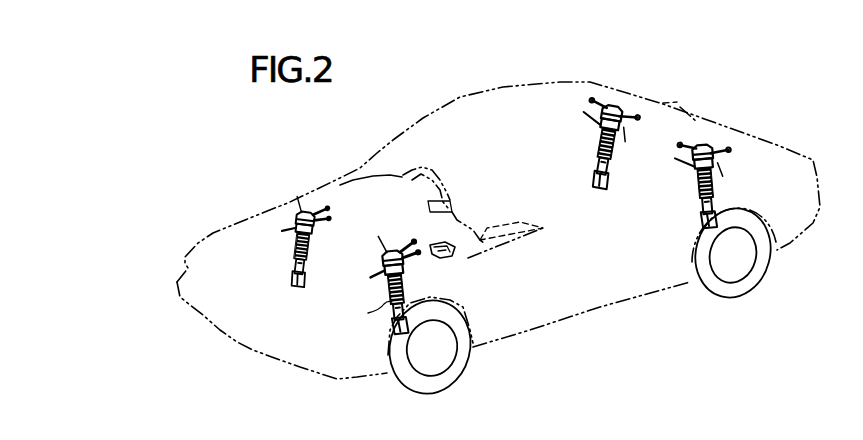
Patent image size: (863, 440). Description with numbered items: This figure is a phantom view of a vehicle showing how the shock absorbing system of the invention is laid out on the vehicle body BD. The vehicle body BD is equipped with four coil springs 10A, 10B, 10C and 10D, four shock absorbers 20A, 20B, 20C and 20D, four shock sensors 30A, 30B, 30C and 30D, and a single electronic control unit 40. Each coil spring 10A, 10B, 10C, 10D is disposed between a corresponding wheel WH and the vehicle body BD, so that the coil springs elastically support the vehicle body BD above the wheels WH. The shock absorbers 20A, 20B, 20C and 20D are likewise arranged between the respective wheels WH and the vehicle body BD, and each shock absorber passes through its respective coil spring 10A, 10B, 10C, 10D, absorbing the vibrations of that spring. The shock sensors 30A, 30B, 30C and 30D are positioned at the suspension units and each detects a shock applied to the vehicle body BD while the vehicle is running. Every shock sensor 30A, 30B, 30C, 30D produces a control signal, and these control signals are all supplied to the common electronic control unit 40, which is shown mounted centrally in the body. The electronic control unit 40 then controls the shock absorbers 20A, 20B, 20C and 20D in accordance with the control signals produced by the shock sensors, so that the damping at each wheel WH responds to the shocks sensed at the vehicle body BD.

The vehicle body BD is at (386, 152).
The wheel WH is at (470, 352).
The electronic control unit 40 is at (462, 255).
The coil spring 10A is at (413, 273).
The coil spring 10B is at (296, 227).
The coil spring 10C is at (711, 183).
The coil spring 10D is at (647, 129).
The shock absorber 20A is at (405, 282).
The shock absorber 20B is at (310, 250).
The shock absorber 20C is at (680, 206).
The shock absorber 20D is at (608, 157).
The shock sensor 30A is at (389, 251).
The shock sensor 30B is at (300, 209).
The shock sensor 30C is at (703, 159).
The shock sensor 30D is at (626, 103).